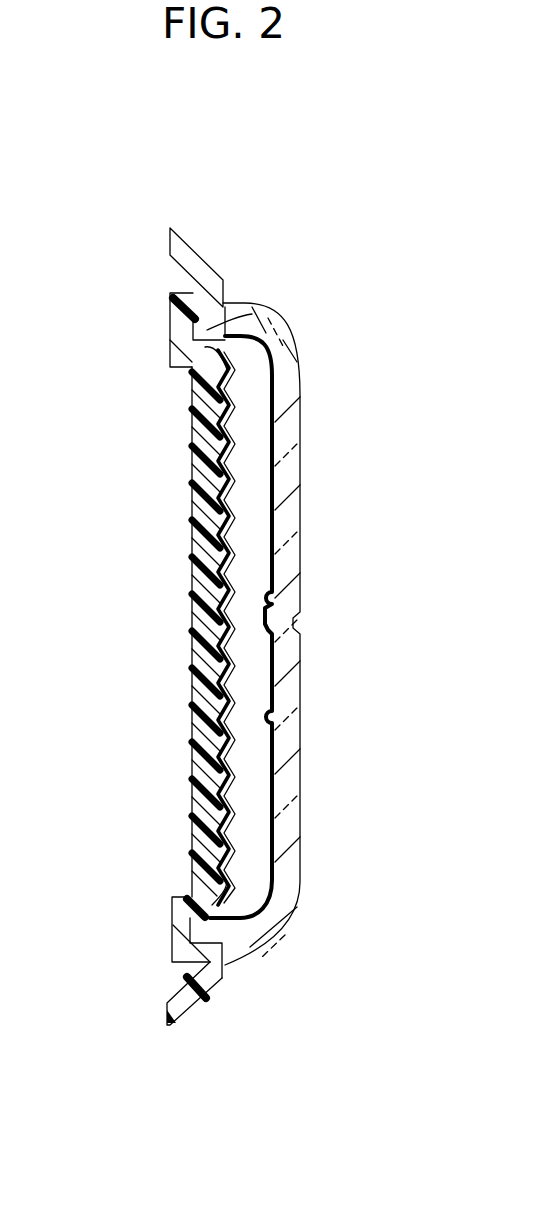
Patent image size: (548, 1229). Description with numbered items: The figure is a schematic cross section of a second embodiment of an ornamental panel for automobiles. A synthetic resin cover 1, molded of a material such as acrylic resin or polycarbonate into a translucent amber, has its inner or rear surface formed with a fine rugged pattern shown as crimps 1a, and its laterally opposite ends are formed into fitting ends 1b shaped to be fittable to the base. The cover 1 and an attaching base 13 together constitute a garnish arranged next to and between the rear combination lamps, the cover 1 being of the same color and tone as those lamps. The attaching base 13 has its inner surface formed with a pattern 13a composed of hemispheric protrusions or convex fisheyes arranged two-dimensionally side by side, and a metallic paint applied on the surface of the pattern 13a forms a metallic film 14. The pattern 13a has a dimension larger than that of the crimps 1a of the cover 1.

The synthetic resin cover 1 is at (300, 542).
The crimps 1a is at (298, 613).
The fitting ends 1b is at (205, 330).
The attaching base 13 is at (192, 633).
The pattern 13a is at (222, 545).
The metallic film 14 is at (192, 733).